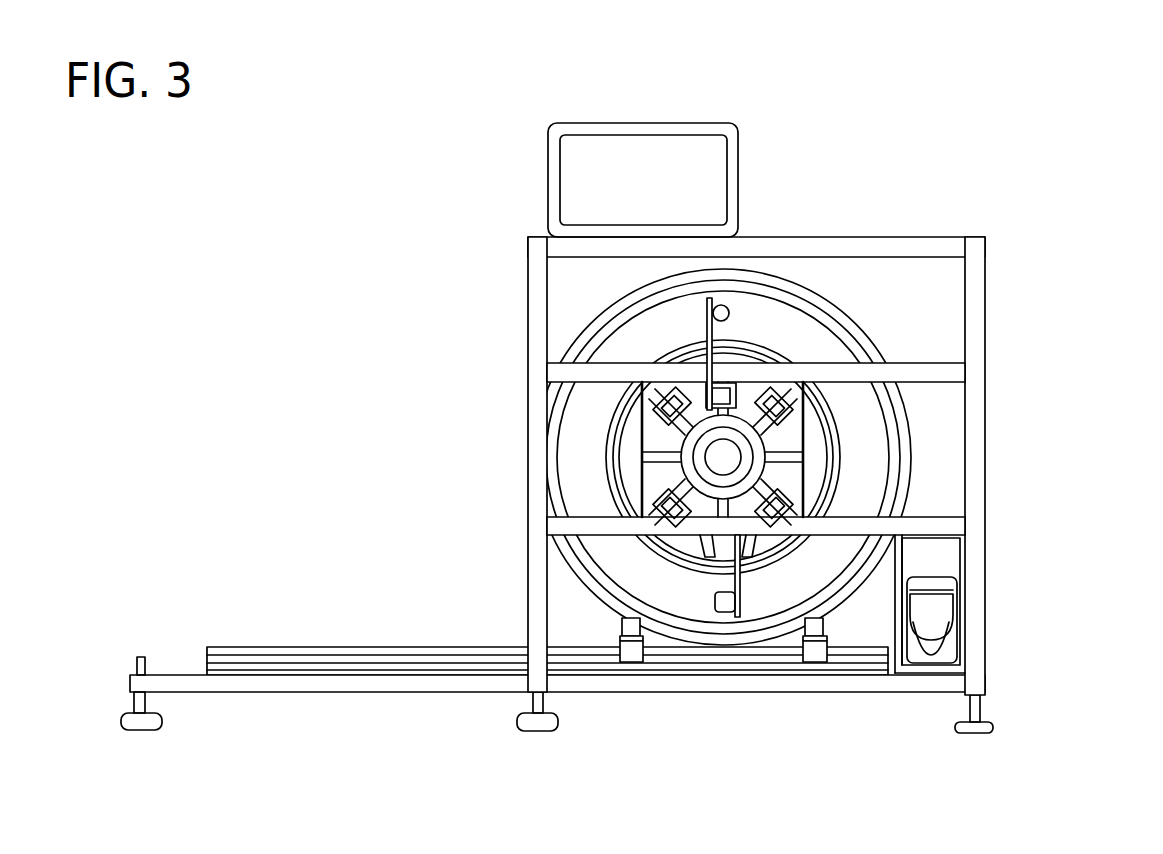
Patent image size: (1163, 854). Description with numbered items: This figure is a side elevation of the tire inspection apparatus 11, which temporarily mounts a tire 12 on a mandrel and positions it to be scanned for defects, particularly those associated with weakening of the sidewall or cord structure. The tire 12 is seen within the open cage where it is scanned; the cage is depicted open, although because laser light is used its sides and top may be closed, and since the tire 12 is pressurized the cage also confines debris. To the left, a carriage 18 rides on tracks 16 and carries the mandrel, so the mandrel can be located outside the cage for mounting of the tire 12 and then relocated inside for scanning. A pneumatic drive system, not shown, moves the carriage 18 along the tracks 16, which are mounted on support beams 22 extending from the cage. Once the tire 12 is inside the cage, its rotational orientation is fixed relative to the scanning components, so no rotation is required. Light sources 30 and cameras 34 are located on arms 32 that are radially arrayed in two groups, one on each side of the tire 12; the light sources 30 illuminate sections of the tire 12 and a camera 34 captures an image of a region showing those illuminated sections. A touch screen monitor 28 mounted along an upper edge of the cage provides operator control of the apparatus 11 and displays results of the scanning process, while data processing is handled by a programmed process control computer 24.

The tire inspection apparatus 11 is at (357, 383).
The tire 12 is at (868, 352).
The tracks 16 is at (247, 645).
The carriage 18 is at (620, 648).
The support beams 22 is at (218, 682).
The process control computer 24 is at (947, 552).
The touch screen monitor 28 is at (567, 153).
The light sources 30 is at (719, 400).
The arms 32 is at (707, 332).
The cameras 34 is at (727, 305).